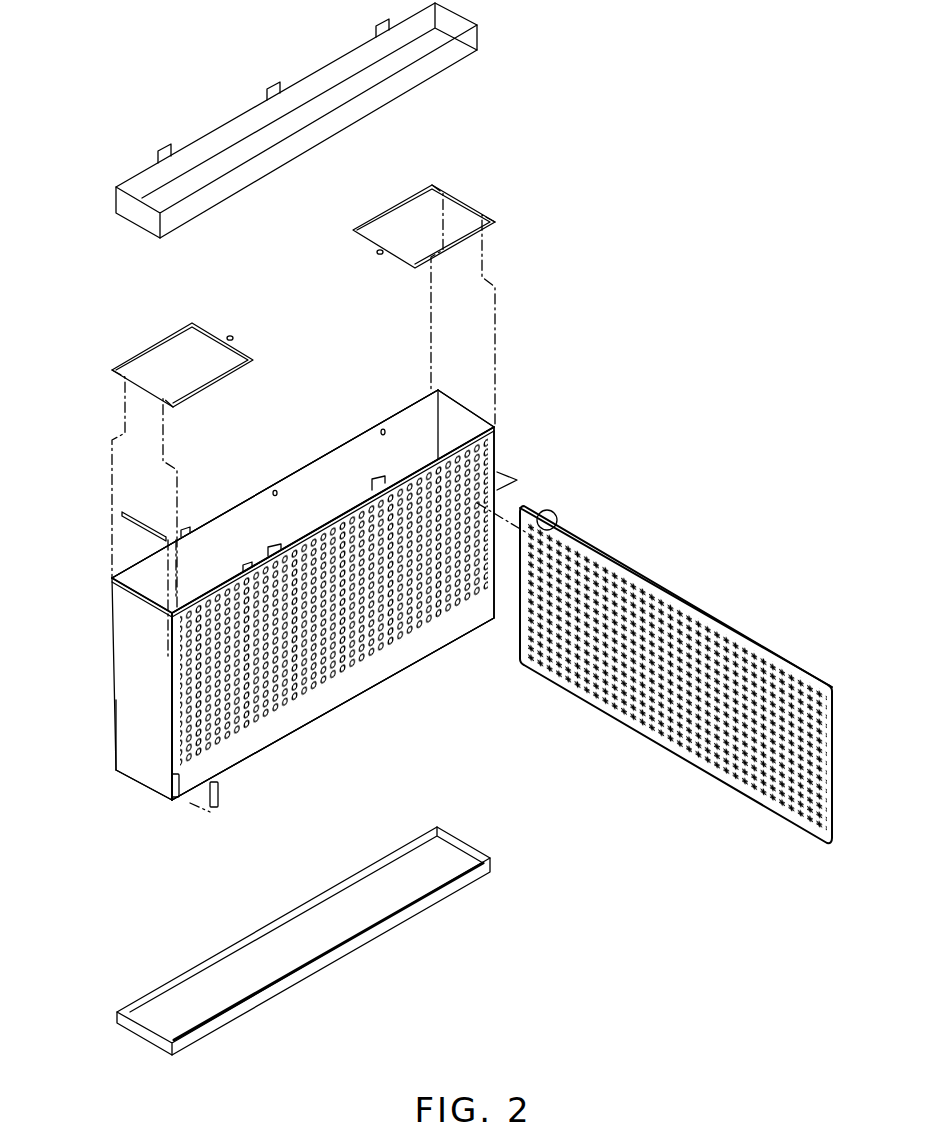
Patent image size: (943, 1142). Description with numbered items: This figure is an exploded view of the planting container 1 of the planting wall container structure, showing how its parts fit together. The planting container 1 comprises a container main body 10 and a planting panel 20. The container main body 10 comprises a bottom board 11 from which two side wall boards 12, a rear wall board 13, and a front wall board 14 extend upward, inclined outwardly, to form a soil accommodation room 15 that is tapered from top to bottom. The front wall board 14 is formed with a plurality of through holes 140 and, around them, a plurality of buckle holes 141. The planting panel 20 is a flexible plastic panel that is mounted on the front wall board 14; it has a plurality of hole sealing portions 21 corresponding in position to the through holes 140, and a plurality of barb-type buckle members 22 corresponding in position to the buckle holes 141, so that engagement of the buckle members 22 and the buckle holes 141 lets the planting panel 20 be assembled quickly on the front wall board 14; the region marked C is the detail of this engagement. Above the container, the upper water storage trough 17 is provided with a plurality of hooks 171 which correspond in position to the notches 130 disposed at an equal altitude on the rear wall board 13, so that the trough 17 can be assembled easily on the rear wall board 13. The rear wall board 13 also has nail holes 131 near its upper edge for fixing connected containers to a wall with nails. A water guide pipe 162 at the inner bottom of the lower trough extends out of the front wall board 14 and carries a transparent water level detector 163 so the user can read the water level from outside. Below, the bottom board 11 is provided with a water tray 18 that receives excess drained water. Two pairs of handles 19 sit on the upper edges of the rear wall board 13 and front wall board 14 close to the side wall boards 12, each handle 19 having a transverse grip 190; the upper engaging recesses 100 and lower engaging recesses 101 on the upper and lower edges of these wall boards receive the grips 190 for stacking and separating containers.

The planting container 1 is at (37, 530).
The container main body 10 is at (320, 582).
The bottom board 11 is at (150, 790).
The side wall boards 12 is at (125, 735).
The rear wall board 13 is at (306, 463).
The notches 130 is at (380, 478).
The nail holes 131 is at (383, 430).
The front wall board 14 is at (399, 589).
The through holes 140 is at (420, 630).
The buckle holes 141 is at (488, 467).
The soil accommodation room 15 is at (450, 418).
The water guide pipe 162 is at (140, 530).
The water level detector 163 is at (222, 797).
The upper water storage trough 17 is at (318, 120).
The hooks 171 is at (157, 160).
The water tray 18 is at (407, 913).
The handles 19 is at (303, 368).
The grip 190 is at (212, 330).
The upper engaging recesses 100 is at (186, 530).
The lower engaging recesses 101 is at (248, 755).
The planting panel 20 is at (676, 674).
The hole sealing portions 21 is at (647, 733).
The buckle members 22 is at (537, 562).
The detail circle C is at (557, 520).